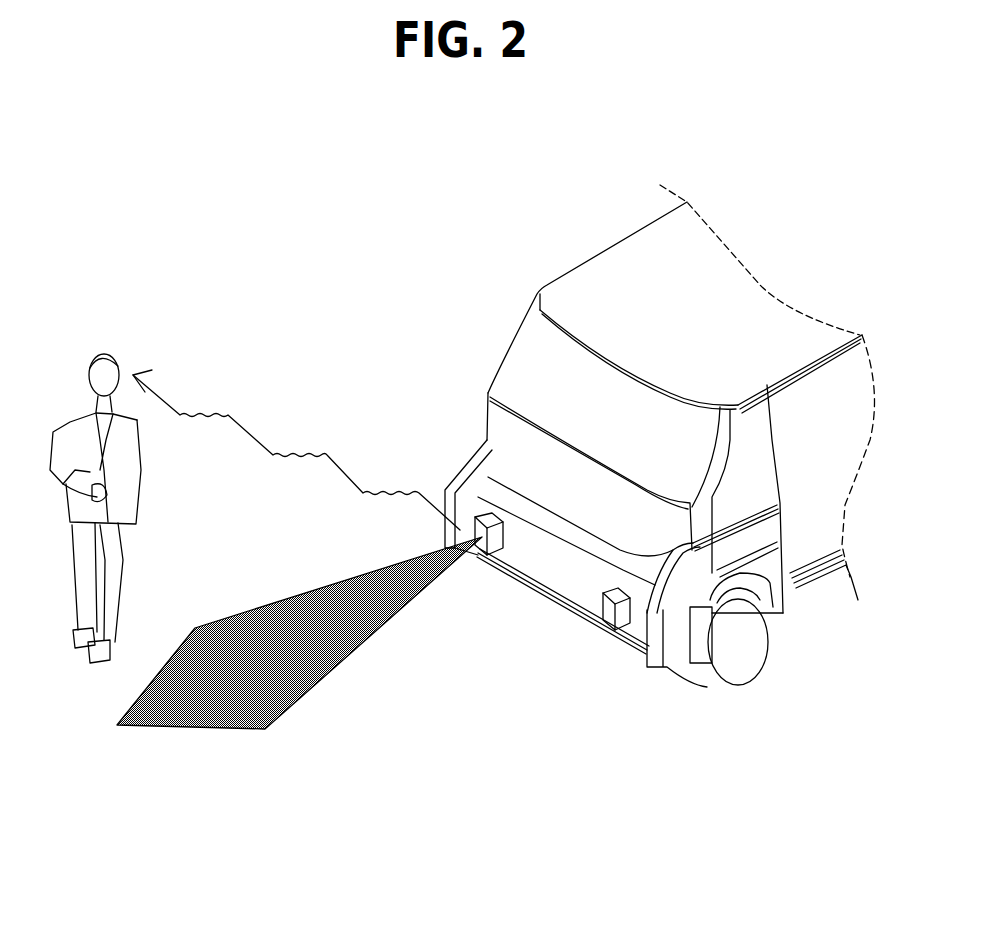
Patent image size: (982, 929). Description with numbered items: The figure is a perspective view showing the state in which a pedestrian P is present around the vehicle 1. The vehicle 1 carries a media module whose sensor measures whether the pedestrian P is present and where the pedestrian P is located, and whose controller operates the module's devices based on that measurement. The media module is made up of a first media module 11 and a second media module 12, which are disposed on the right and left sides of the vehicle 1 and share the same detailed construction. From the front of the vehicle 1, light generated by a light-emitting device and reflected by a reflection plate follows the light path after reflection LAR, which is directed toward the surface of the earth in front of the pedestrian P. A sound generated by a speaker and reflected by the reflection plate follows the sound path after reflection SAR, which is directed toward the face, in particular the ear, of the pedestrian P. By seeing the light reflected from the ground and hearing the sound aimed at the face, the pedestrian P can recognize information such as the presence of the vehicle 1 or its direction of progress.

The vehicle 1 is at (598, 213).
The first media module 11 is at (490, 562).
The second media module 12 is at (612, 632).
The pedestrian P is at (96, 352).
The sound path after reflection SAR is at (233, 414).
The light path after reflection LAR is at (298, 663).